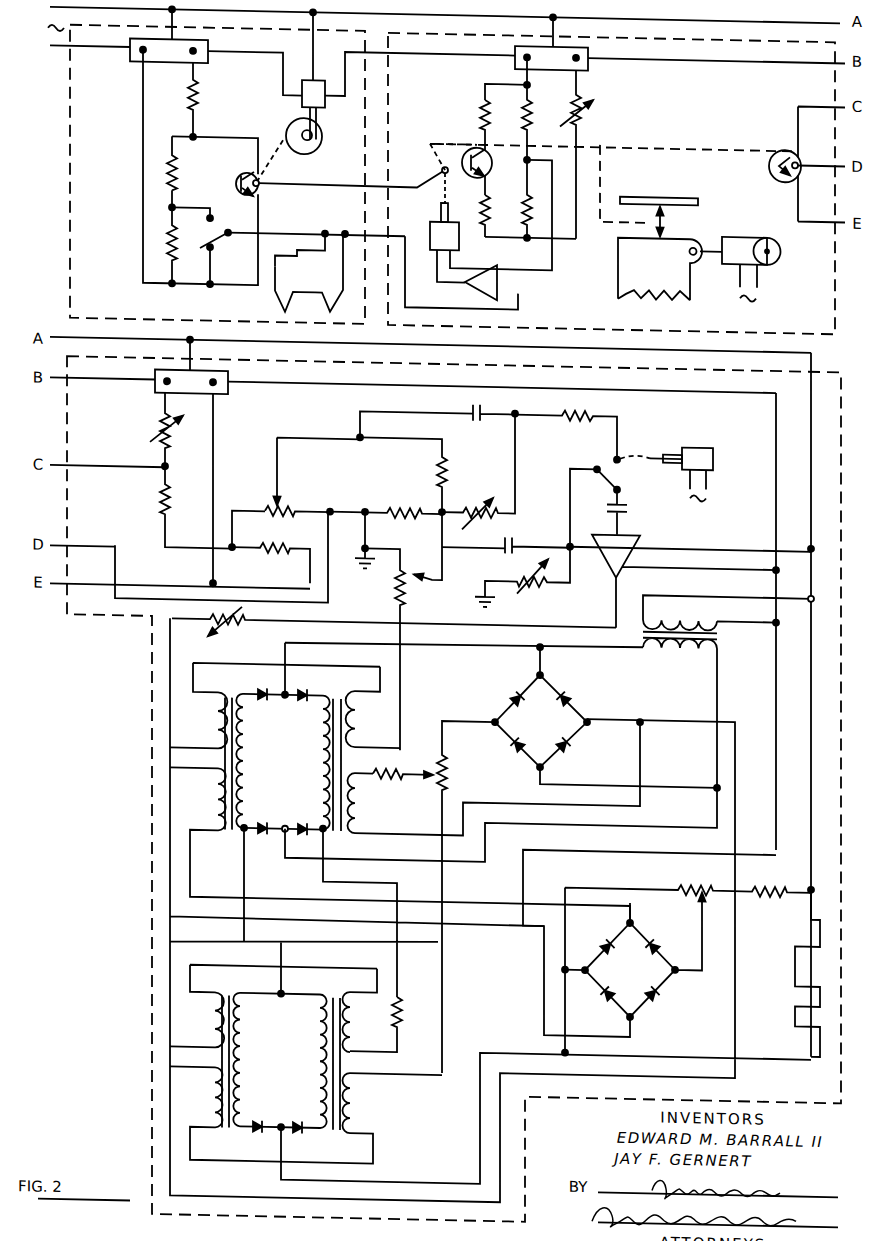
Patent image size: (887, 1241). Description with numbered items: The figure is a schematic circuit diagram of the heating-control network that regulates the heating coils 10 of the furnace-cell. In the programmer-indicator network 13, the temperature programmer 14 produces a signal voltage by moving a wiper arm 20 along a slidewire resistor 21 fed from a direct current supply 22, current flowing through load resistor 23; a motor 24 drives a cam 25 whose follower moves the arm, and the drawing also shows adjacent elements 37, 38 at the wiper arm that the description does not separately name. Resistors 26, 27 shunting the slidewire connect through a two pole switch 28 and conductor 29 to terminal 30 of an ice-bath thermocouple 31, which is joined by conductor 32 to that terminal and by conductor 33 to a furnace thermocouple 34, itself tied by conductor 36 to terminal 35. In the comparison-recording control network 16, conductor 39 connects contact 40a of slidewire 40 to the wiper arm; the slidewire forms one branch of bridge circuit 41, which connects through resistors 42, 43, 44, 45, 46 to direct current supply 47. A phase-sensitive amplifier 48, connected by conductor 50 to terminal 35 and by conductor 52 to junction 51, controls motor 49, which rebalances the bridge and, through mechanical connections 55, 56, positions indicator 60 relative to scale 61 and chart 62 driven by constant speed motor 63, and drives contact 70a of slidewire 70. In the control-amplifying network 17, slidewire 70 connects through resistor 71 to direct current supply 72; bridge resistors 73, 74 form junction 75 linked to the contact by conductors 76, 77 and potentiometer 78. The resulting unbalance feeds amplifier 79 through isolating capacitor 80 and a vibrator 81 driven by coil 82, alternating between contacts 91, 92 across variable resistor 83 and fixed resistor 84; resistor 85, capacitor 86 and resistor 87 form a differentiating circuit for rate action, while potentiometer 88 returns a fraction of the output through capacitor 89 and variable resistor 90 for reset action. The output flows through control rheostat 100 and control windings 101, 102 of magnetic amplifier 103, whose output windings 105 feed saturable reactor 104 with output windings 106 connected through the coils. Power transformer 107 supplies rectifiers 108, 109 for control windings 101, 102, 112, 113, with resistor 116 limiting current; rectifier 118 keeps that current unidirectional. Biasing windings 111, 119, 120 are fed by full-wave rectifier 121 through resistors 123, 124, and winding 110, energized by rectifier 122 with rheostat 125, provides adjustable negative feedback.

The heating coils 10 is at (795, 990).
The programmer-indicator network 13 is at (73, 281).
The temperature programmer 14 is at (100, 80).
The comparison-recording control network 16 is at (830, 278).
The control-amplifying network 17 is at (118, 630).
The wiper arm 20 is at (246, 176).
The slidewire resistor 21 is at (240, 192).
The direct current supply 22 is at (140, 69).
The load resistor 23 is at (203, 104).
The motor 24 is at (298, 107).
The cam 25 is at (308, 158).
The resistor 26 is at (165, 181).
The resistor 27 is at (165, 246).
The two pole switch 28 is at (222, 253).
The conductor 29 is at (244, 237).
The terminal 30 is at (325, 235).
The thermocouple 31 is at (277, 305).
The conductor 32 is at (297, 252).
The conductor 33 is at (307, 292).
The thermocouple 34 is at (328, 308).
The terminal 35 is at (345, 235).
The conductor 36 is at (342, 284).
The collector 37 is at (239, 186).
The emitter 38 is at (257, 204).
The conductor 39 is at (343, 187).
The slidewire 40 is at (486, 165).
The contact 40a is at (462, 160).
The bridge circuit 41 is at (612, 103).
The resistor 42 is at (594, 112).
The resistor 43 is at (530, 106).
The resistor 44 is at (522, 210).
The resistor 45 is at (480, 102).
The resistor 46 is at (487, 200).
The direct current supply 47 is at (588, 68).
The phase-sensitive amplifier 48 is at (498, 284).
The motor 49 is at (430, 228).
The conductor 50 is at (518, 307).
The junction 51 is at (528, 155).
The conductor 52 is at (552, 257).
The mechanical connection 55 is at (603, 176).
The mechanical connection 56 is at (695, 141).
The indicator 60 is at (667, 216).
The scale 61 is at (673, 193).
The chart 62 is at (690, 284).
The constant speed motor 63 is at (742, 231).
The slidewire 70 is at (778, 167).
The contact 70a is at (786, 147).
The resistor 71 is at (158, 428).
The direct current supply 72 is at (230, 399).
The bridge resistor 73 is at (160, 518).
The bridge resistor 74 is at (285, 550).
The junction 75 is at (236, 555).
The conductor 76 is at (247, 512).
The conductor 77 is at (330, 588).
The potentiometer 78 is at (285, 503).
The amplifier 79 is at (614, 568).
The capacitor 80 is at (628, 509).
The vibrator 81 is at (606, 490).
The coil 82 is at (703, 442).
The variable resistor 83 is at (471, 505).
The fixed resistor 84 is at (405, 508).
The resistor 85 is at (435, 476).
The capacitor 86 is at (477, 424).
The resistor 87 is at (574, 424).
The potentiometer 88 is at (409, 594).
The capacitor 89 is at (513, 542).
The variable resistor 90 is at (537, 586).
The upper contact 91 is at (621, 452).
The lower contact 92 is at (590, 466).
The control rheostat 100 is at (219, 632).
The control winding 101 is at (216, 733).
The control winding 102 is at (356, 735).
The magnetic amplifier 103 is at (370, 811).
The saturable reactor 104 is at (396, 1108).
The output windings 105 is at (248, 785).
The output windings 106 is at (242, 1070).
The power transformer 107 is at (679, 655).
The rectifier 108 is at (274, 705).
The rectifier 109 is at (278, 822).
The winding 110 is at (217, 810).
The biasing winding 111 is at (358, 803).
The control winding 112 is at (212, 1030).
The control winding 113 is at (356, 1028).
The resistor 116 is at (401, 1018).
The rectifier 118 is at (274, 1120).
The biasing winding 119 is at (210, 1085).
The biasing winding 120 is at (362, 1103).
The full-wave rectifier 121 is at (527, 729).
The rectifier 122 is at (617, 975).
The resistor 123 is at (405, 773).
The resistor 124 is at (453, 771).
The rheostat 125 is at (690, 897).